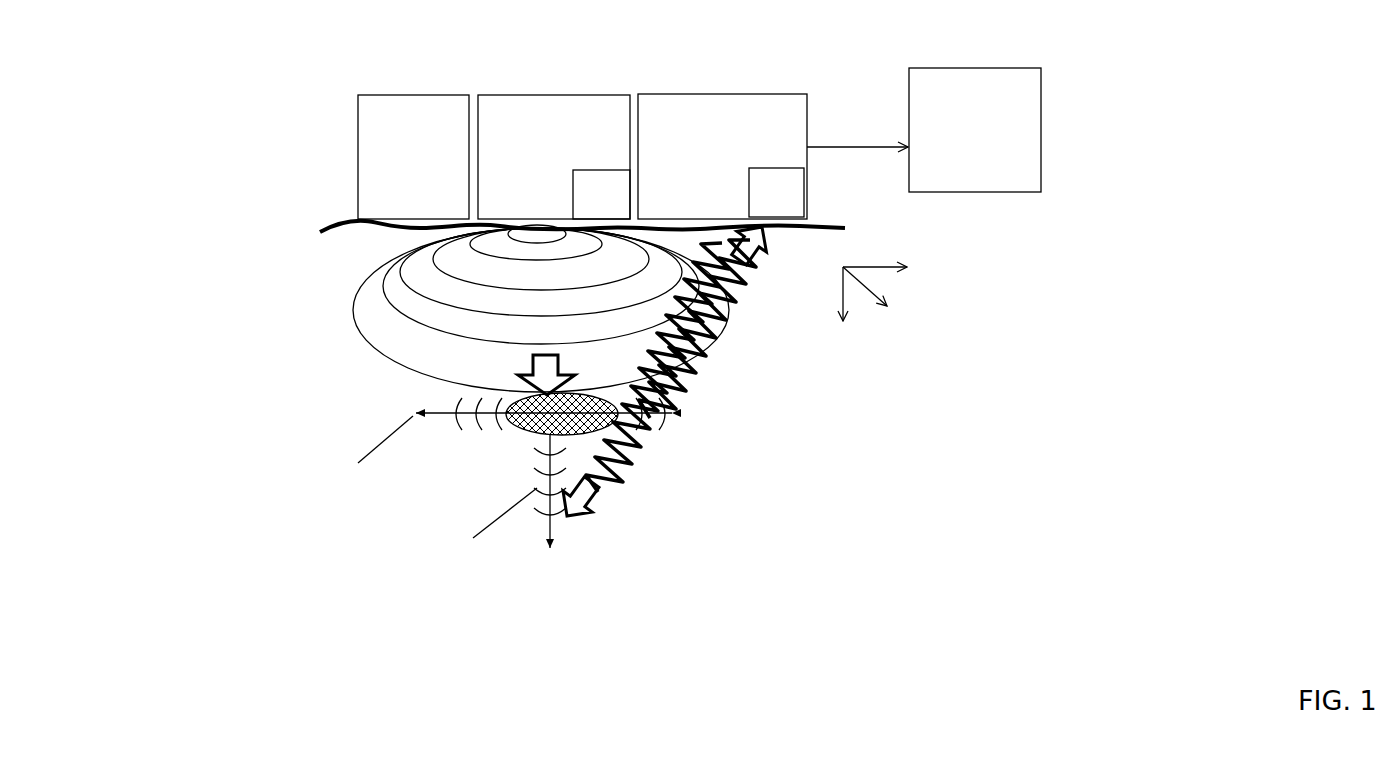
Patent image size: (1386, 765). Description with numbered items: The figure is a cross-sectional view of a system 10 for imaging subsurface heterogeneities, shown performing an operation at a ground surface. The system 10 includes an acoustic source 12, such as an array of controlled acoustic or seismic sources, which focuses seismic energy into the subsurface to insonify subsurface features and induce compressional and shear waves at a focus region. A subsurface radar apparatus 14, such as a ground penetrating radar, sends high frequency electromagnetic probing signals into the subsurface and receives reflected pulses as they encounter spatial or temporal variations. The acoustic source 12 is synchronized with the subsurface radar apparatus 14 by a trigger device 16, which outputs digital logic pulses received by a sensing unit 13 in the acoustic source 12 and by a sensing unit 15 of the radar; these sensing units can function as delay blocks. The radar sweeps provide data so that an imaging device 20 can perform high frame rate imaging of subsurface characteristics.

The system 10 is at (1312, 78).
The acoustic source 12 is at (554, 157).
The sensing unit 13 is at (601, 194).
The subsurface radar apparatus 14 is at (722, 156).
The sensing unit 15 is at (776, 192).
The trigger device 16 is at (413, 157).
The imaging device 20 is at (975, 130).